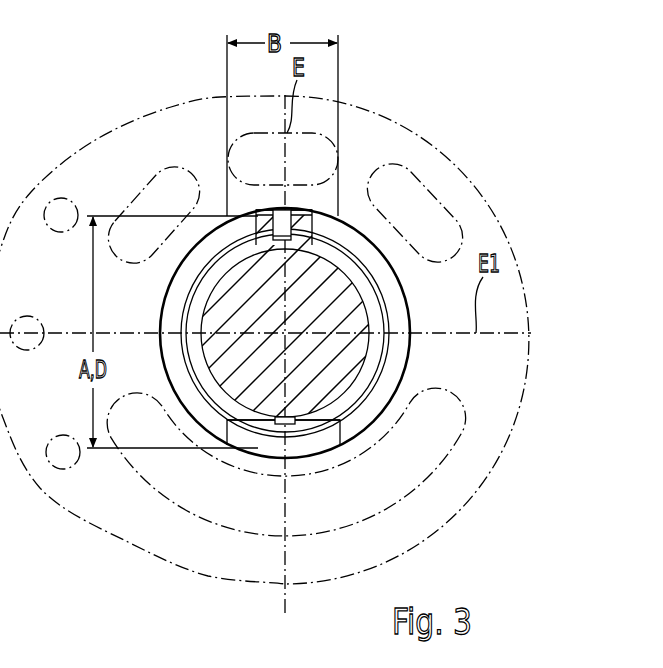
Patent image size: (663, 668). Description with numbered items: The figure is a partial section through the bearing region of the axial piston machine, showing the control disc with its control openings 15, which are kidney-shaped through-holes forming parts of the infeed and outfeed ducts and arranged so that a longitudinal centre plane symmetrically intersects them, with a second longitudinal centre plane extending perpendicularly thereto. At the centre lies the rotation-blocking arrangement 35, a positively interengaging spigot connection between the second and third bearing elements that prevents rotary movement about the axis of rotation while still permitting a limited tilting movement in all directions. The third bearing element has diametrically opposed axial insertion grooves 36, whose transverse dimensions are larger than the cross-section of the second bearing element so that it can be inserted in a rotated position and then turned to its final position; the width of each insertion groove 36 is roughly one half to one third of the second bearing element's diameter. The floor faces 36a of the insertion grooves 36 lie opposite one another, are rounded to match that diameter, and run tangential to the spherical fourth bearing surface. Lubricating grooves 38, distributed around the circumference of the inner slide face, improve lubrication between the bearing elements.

The control openings 15 is at (334, 157).
The rotation-blocking arrangement 35 is at (296, 252).
The axial insertion groove 36 is at (255, 217).
The floor faces 36a is at (256, 212).
The lubricating grooves 38 is at (283, 246).